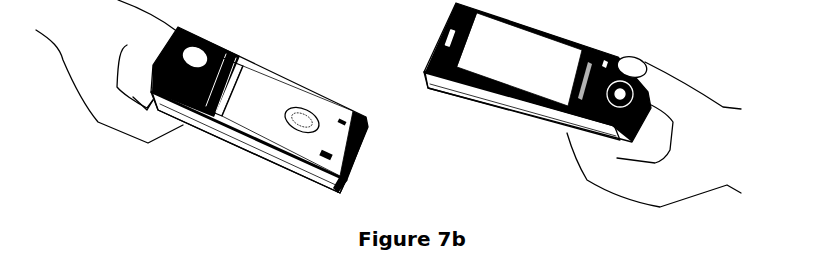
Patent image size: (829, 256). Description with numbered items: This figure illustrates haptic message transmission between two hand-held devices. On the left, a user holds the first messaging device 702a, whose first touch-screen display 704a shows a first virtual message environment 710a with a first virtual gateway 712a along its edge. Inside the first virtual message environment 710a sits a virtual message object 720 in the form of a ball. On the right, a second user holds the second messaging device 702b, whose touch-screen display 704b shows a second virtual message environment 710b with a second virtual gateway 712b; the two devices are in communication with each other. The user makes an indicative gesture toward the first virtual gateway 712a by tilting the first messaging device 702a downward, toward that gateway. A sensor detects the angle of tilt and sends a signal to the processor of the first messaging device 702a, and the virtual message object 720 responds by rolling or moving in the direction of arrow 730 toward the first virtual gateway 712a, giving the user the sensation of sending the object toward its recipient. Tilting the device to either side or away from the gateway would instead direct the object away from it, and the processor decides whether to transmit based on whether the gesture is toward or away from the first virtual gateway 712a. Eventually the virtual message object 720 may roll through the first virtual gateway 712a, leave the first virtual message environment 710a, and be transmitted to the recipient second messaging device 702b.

The first messaging device 702a is at (220, 43).
The first touch-screen display 704a is at (293, 72).
The first virtual message environment 710a is at (247, 113).
The first virtual gateway 712a is at (318, 178).
The virtual message object 720 is at (290, 122).
The arrow 730 is at (283, 110).
The second messaging device 702b is at (616, 62).
The touch-screen display of the second messaging device 704b is at (540, 33).
The second virtual message environment 710b is at (547, 80).
The second virtual gateway 712b is at (460, 100).